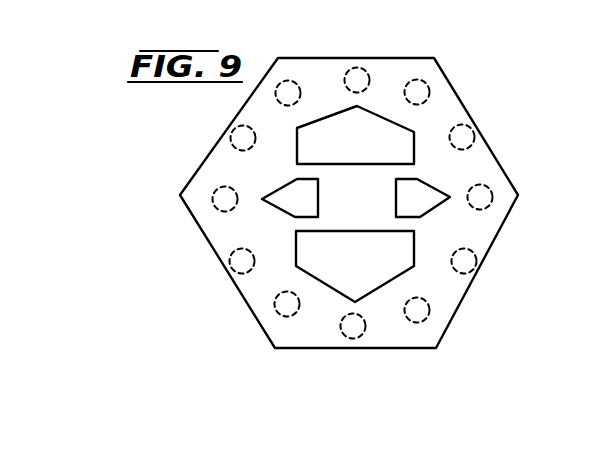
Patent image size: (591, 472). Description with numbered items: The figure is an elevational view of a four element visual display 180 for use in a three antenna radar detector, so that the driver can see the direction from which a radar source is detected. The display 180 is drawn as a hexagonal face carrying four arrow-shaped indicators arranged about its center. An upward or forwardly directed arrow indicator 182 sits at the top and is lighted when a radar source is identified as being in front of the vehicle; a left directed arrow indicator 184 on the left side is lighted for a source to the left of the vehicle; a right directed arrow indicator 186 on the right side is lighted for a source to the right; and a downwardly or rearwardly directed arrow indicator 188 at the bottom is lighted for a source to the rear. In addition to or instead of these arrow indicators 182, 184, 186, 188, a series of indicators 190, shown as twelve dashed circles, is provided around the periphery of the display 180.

The four element visual display 180 is at (455, 93).
The forwardly directed arrow indicator 182 is at (380, 115).
The left directed arrow indicator 184 is at (278, 208).
The right directed arrow indicator 186 is at (443, 192).
The rearwardly directed arrow indicator 188 is at (404, 274).
The series of indicators 190 is at (350, 67).